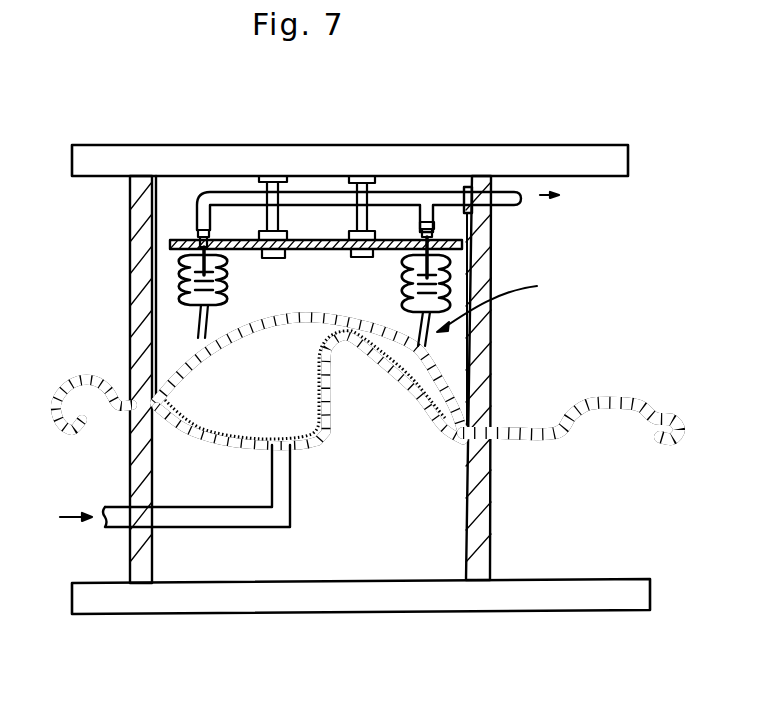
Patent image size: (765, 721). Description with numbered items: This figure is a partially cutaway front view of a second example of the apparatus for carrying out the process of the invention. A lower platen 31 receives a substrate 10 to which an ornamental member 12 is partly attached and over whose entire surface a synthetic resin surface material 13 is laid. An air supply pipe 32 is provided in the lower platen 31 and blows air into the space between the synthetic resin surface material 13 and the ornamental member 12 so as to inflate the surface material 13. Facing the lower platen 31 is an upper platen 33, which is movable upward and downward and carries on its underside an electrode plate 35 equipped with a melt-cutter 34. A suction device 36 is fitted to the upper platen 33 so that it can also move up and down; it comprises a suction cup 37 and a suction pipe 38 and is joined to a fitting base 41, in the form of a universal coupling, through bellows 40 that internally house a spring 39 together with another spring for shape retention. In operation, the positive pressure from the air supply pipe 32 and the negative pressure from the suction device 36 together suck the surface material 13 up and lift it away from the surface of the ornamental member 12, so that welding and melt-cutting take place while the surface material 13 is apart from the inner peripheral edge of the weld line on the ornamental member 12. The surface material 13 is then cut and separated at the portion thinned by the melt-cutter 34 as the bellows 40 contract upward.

The substrate 10 is at (527, 445).
The ornamental member 12 is at (320, 386).
The synthetic resin surface material 13 is at (291, 322).
The lower platen 31 is at (324, 612).
The air supply pipe 32 is at (249, 528).
The upper platen 33 is at (315, 145).
The melt-cutter 34 is at (492, 373).
The electrode plate 35 is at (493, 342).
The suction device 36 is at (504, 303).
The suction cup 37 is at (200, 333).
The suction pipe 38 is at (196, 240).
The spring 39 is at (180, 275).
The bellows 40 is at (190, 298).
The fitting base 41 is at (240, 198).